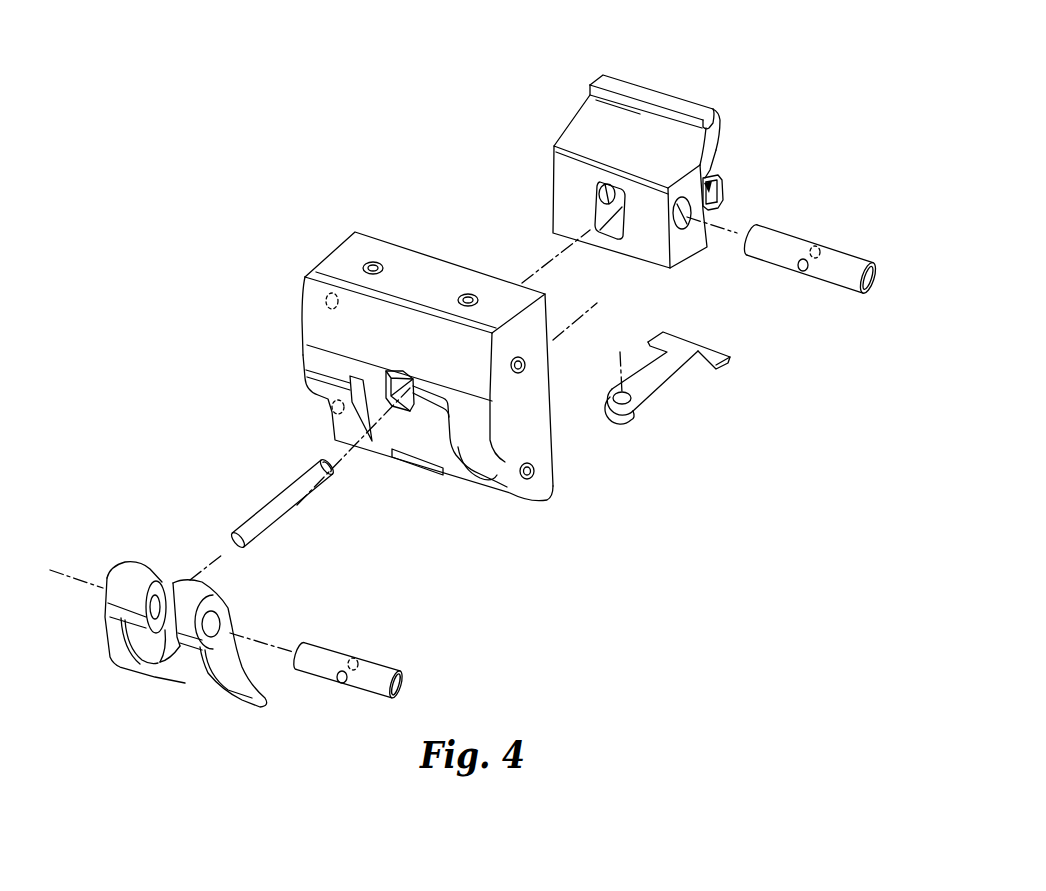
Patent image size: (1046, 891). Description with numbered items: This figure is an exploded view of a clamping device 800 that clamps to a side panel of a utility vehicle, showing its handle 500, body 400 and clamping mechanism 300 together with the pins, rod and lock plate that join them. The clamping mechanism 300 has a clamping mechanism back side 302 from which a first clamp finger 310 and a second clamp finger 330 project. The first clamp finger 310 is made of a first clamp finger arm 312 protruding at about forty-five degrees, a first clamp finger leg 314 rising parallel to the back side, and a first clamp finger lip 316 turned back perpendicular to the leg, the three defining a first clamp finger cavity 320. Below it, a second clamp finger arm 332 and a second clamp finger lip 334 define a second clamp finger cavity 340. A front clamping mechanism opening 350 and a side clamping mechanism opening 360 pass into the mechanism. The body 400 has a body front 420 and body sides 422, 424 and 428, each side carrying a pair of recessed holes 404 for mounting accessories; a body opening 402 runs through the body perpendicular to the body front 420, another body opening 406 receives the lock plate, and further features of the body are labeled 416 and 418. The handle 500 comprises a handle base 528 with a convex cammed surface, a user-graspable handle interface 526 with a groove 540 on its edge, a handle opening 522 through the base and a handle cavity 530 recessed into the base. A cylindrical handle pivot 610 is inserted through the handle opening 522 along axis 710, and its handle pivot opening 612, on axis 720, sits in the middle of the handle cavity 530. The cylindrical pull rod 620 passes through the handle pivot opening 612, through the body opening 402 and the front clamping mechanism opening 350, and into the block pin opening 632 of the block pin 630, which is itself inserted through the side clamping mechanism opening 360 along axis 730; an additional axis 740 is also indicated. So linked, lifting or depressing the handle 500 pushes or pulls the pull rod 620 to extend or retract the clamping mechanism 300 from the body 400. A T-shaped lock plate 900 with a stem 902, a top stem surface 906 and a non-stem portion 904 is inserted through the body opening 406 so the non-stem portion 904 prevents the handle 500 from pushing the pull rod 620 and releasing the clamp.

The clamping mechanism 300 is at (621, 56).
The clamping mechanism back side 302 is at (563, 220).
The first clamp finger 310 is at (749, 139).
The first clamp finger arm 312 is at (603, 108).
The first clamp finger leg 314 is at (714, 131).
The first clamp finger lip 316 is at (713, 125).
The first clamp finger cavity 320 is at (582, 92).
The second clamp finger 330 is at (757, 204).
The second clamp finger arm 332 is at (721, 196).
The second clamp finger lip 334 is at (717, 183).
The second clamp finger cavity 340 is at (707, 183).
The front clamping mechanism opening 350 is at (602, 213).
The side clamping mechanism opening 360 is at (608, 193).
The body 400 is at (340, 208).
The body opening 402 is at (398, 392).
The recessed holes 404 is at (373, 263).
The body opening 406 is at (422, 468).
The notch 416 is at (488, 478).
The lower wall 418 is at (307, 370).
The body front 420 is at (315, 323).
The body side 422 is at (422, 270).
The body side 424 is at (530, 427).
The body side 428 is at (288, 285).
The handle 500 is at (88, 624).
The handle opening 522 is at (153, 600).
The handle interface 526 is at (113, 643).
The handle base 528 is at (120, 562).
The handle cavity 530 is at (153, 667).
The groove 540 is at (173, 677).
The handle pivot 610 is at (383, 630).
The handle pivot opening 612 is at (340, 682).
The pull rod 620 is at (238, 494).
The block pin 630 is at (849, 217).
The block pin opening 632 is at (798, 272).
The axis 710 is at (283, 640).
The axis 720 is at (548, 272).
The axis 730 is at (740, 232).
The axis 740 is at (553, 343).
The clamping device 800 is at (406, 125).
The lock plate 900 is at (683, 394).
The stem 902 is at (658, 416).
The non-stem portion 904 is at (707, 341).
The top stem surface 906 is at (647, 377).